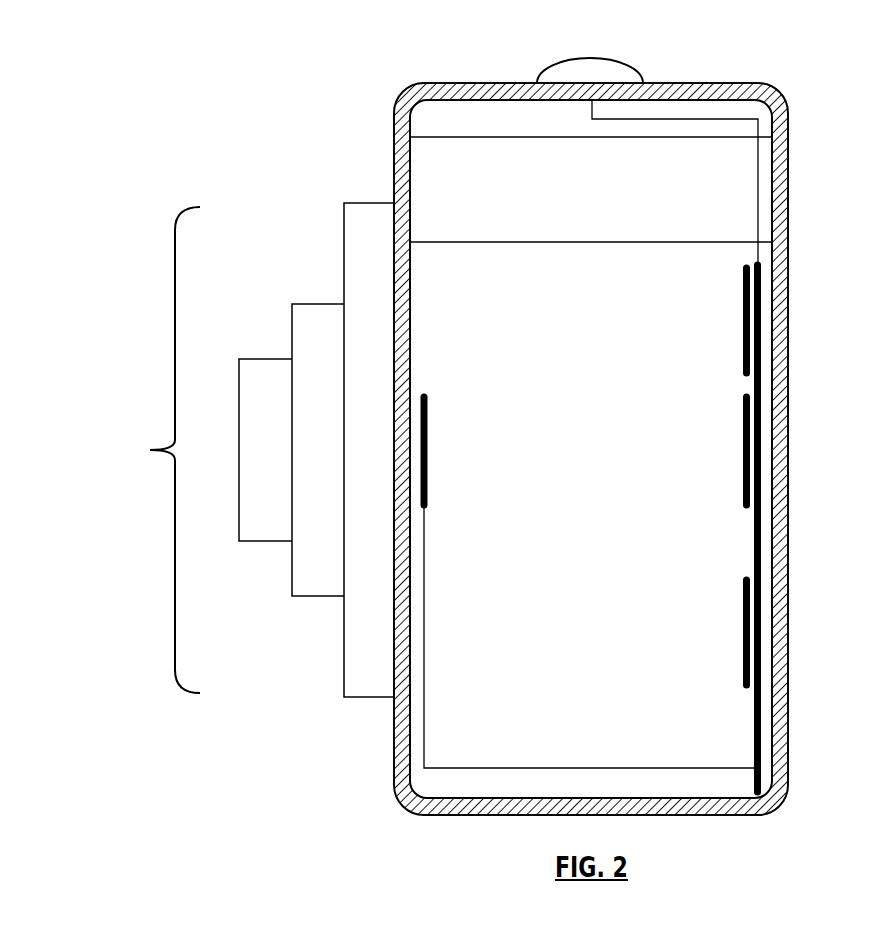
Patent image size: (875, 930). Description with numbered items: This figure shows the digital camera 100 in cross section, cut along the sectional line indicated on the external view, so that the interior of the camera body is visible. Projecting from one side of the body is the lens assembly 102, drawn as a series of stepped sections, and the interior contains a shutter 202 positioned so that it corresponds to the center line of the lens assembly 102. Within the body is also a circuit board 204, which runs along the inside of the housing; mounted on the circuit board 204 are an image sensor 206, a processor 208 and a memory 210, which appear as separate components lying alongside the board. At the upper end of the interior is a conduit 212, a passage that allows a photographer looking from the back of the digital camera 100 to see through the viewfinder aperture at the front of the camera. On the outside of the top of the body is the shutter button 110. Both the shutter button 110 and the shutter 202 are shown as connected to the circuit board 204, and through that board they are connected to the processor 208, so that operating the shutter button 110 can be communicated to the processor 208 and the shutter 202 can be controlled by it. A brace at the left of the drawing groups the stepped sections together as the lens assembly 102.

The digital camera 100 is at (395, 120).
The lens assembly 102 is at (150, 449).
The shutter button 110 is at (638, 72).
The shutter 202 is at (427, 433).
The circuit board 204 is at (754, 745).
The image sensor 206 is at (743, 433).
The processor 208 is at (743, 630).
The memory 210 is at (743, 318).
The conduit 212 is at (608, 202).